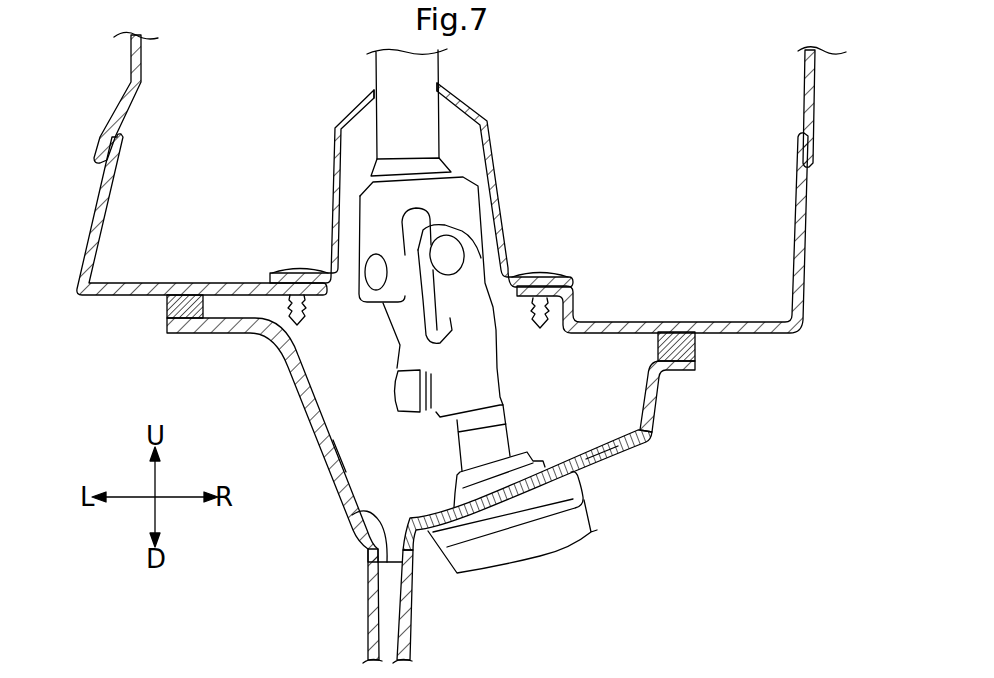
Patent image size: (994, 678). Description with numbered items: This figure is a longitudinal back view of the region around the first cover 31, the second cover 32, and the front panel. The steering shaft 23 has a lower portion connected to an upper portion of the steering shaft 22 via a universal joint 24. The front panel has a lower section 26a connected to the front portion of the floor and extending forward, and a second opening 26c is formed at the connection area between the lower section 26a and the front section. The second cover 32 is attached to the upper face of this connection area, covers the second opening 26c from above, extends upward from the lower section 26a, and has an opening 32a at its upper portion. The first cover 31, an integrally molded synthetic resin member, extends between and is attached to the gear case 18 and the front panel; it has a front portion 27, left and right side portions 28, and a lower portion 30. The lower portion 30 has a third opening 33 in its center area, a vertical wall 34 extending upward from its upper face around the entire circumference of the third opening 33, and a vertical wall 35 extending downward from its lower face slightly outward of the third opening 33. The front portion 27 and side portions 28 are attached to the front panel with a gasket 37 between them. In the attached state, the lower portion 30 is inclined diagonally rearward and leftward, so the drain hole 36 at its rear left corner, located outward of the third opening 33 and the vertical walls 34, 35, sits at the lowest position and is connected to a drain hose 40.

The gear case 18 is at (528, 543).
The steering shaft 22 is at (500, 430).
The steering shaft 23 is at (420, 73).
The universal joint 24 is at (480, 334).
The lower section 26a is at (178, 283).
The second opening 26c is at (508, 284).
The front portion 27 is at (360, 455).
The side portions 28 is at (313, 425).
The lower portion 30 is at (600, 463).
The first cover 31 is at (653, 458).
The second cover 32 is at (494, 163).
The opening 32a is at (393, 92).
The third opening 33 is at (451, 455).
The vertical wall 34 is at (458, 482).
The vertical wall 35 is at (472, 526).
The drain hole 36 is at (360, 522).
The gasket 37 is at (165, 304).
The drain hose 40 is at (370, 610).